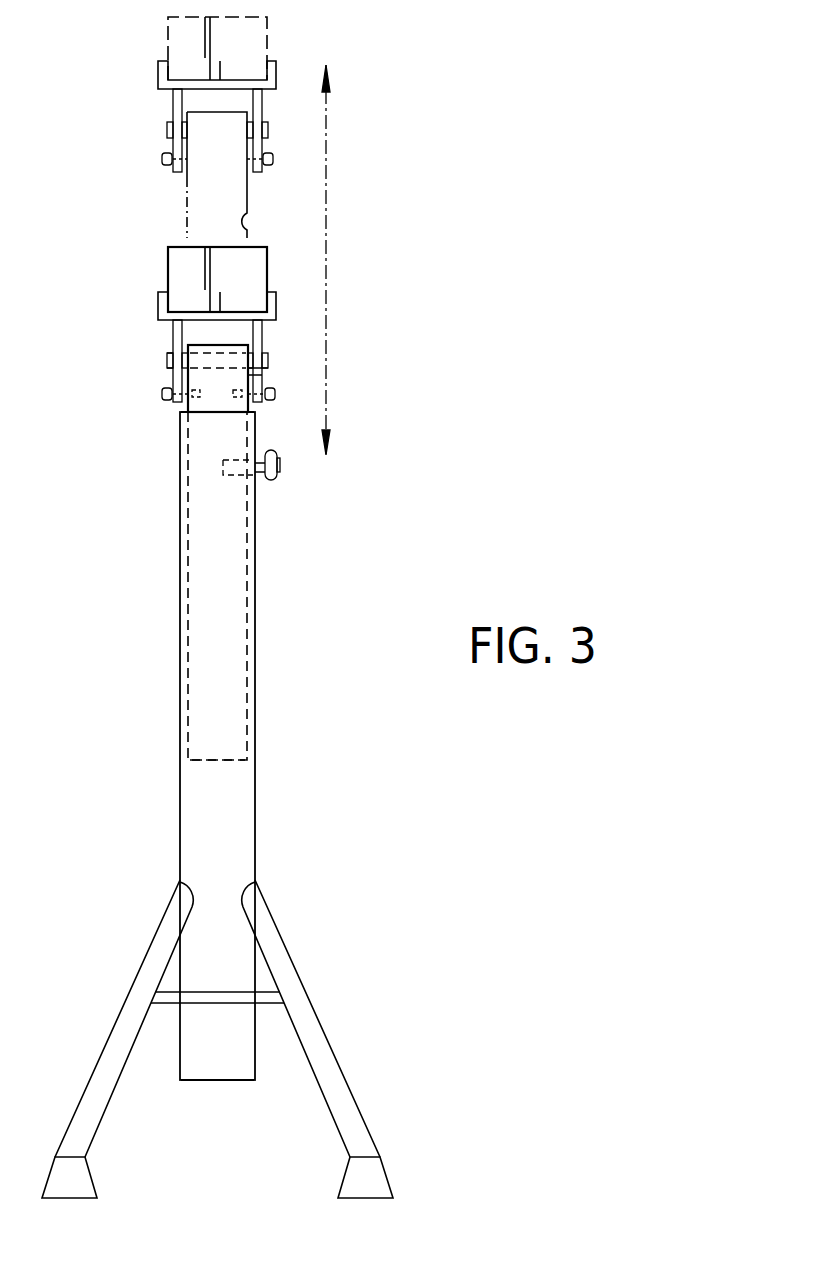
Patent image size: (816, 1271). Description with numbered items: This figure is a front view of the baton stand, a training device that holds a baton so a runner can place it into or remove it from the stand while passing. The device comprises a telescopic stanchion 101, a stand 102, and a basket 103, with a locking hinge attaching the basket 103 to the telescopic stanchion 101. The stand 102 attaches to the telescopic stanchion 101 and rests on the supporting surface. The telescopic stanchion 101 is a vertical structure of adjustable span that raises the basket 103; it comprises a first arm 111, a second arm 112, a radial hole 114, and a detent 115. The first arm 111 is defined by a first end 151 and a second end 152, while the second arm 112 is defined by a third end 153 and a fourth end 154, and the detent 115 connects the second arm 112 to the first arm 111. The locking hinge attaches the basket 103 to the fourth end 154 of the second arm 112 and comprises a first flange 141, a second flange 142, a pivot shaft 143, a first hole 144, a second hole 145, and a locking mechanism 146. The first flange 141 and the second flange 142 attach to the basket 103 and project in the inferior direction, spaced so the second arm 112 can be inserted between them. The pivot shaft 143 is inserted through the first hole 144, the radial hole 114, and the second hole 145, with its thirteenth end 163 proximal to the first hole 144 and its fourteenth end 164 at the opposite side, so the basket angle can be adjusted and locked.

The telescopic stanchion 101 is at (236, 786).
The stand 102 is at (355, 1110).
The basket 103 is at (253, 29).
The first arm 111 is at (227, 863).
The second arm 112 is at (202, 404).
The radial hole 114 is at (255, 348).
The detent 115 is at (268, 482).
The first flange 141 is at (262, 375).
The second flange 142 is at (172, 371).
The pivot shaft 143 is at (273, 397).
The first hole 144 is at (270, 357).
The second hole 145 is at (172, 363).
The locking mechanism 146 is at (163, 396).
The first end 151 is at (217, 1080).
The second end 152 is at (210, 414).
The third end 153 is at (213, 762).
The fourth end 154 is at (218, 345).
The thirteenth end 163 is at (270, 363).
The fourteenth end 164 is at (172, 353).